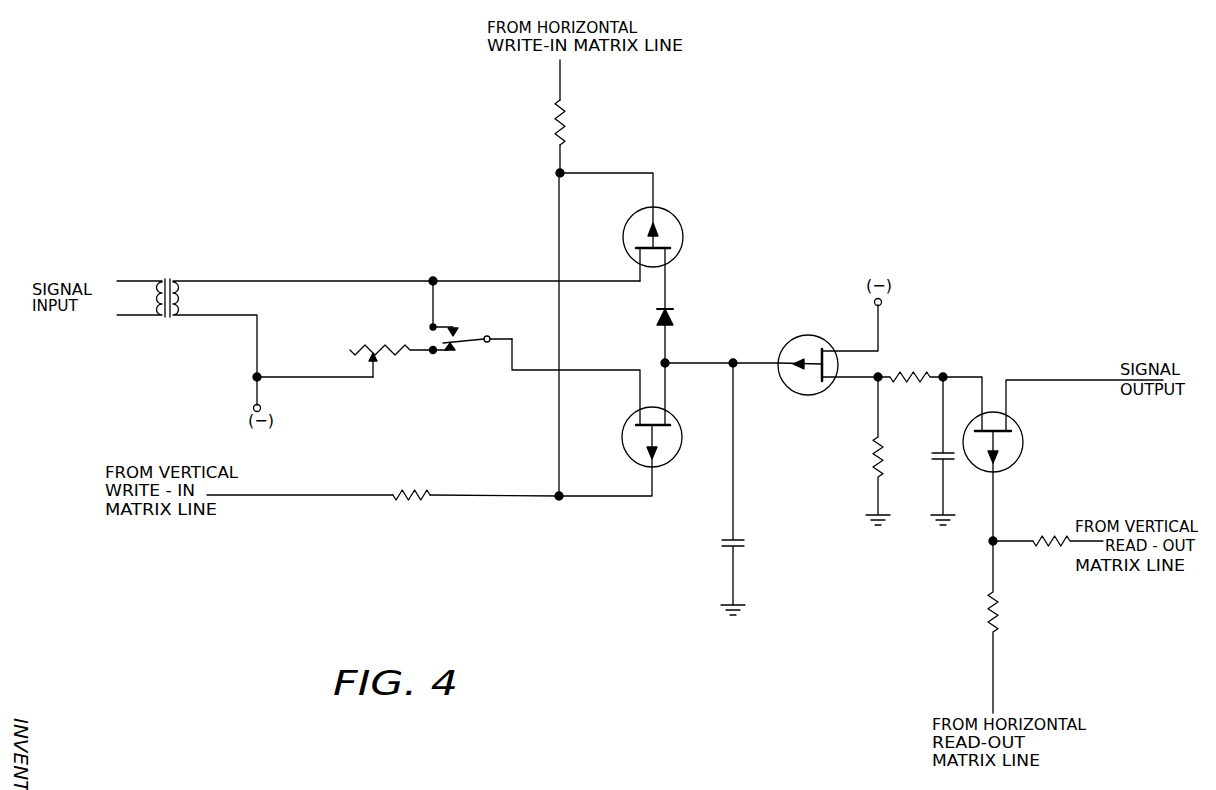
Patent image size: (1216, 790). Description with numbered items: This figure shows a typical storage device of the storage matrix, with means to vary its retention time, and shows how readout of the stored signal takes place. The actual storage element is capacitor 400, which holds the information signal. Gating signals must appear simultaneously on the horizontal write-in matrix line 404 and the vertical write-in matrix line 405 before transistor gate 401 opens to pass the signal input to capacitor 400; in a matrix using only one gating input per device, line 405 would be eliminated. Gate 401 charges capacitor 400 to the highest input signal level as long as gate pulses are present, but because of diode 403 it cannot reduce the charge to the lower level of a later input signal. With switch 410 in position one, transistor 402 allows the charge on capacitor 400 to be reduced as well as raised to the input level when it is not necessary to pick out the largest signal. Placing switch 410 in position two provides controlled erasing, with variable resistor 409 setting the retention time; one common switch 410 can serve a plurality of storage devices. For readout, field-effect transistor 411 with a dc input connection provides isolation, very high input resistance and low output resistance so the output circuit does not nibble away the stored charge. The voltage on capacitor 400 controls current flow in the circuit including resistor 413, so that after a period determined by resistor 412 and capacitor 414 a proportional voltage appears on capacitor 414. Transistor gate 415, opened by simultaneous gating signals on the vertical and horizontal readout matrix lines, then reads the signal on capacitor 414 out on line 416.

The capacitor 400 is at (723, 540).
The transistor gate 401 is at (672, 213).
The transistor 402 is at (628, 419).
The diode 403 is at (676, 318).
The horizontal write-in matrix line 404 is at (560, 87).
The vertical write-in matrix line 405 is at (330, 495).
The variable resistor 409 is at (354, 346).
The switch 410 is at (482, 336).
The field-effect transistor 411 is at (789, 341).
The resistor 412 is at (912, 374).
The resistor 413 is at (871, 462).
The capacitor 414 is at (938, 452).
The transistor gate 415 is at (1016, 422).
The output line 416 is at (1040, 380).